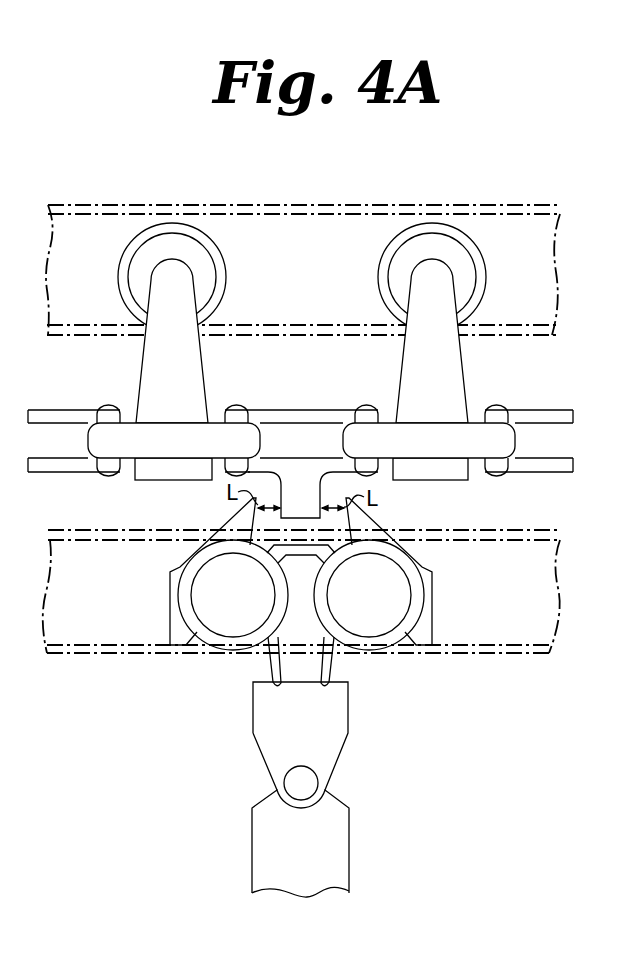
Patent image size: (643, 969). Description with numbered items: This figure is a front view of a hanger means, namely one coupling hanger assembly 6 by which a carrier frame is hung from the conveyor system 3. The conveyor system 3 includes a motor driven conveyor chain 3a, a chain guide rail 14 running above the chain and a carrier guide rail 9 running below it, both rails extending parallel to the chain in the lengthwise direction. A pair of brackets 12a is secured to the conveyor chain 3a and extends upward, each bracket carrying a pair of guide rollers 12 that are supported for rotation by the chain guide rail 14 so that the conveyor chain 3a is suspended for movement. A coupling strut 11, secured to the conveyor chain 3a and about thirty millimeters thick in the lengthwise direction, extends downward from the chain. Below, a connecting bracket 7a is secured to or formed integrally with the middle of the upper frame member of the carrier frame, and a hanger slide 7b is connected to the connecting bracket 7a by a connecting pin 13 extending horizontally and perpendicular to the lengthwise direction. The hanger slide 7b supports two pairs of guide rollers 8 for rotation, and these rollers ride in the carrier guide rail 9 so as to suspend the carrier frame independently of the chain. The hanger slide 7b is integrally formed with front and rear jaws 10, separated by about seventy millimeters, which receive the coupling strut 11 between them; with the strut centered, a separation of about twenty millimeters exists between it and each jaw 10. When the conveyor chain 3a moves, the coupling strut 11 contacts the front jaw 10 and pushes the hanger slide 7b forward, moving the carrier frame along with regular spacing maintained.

The conveyor system 3 is at (386, 189).
The conveyor chain 3a is at (538, 410).
The chain guide rail 14 is at (545, 229).
The guide rollers 12 is at (207, 268).
The brackets 12a is at (141, 361).
The coupling strut 11 is at (348, 480).
The jaws 10 is at (235, 526).
The carrier guide rail 9 is at (540, 552).
The guide rollers 8 is at (203, 584).
The hanger slide 7b is at (350, 711).
The connecting pin 13 is at (312, 783).
The connecting bracket 7a is at (350, 857).
The coupling hanger assembly 6 is at (301, 789).